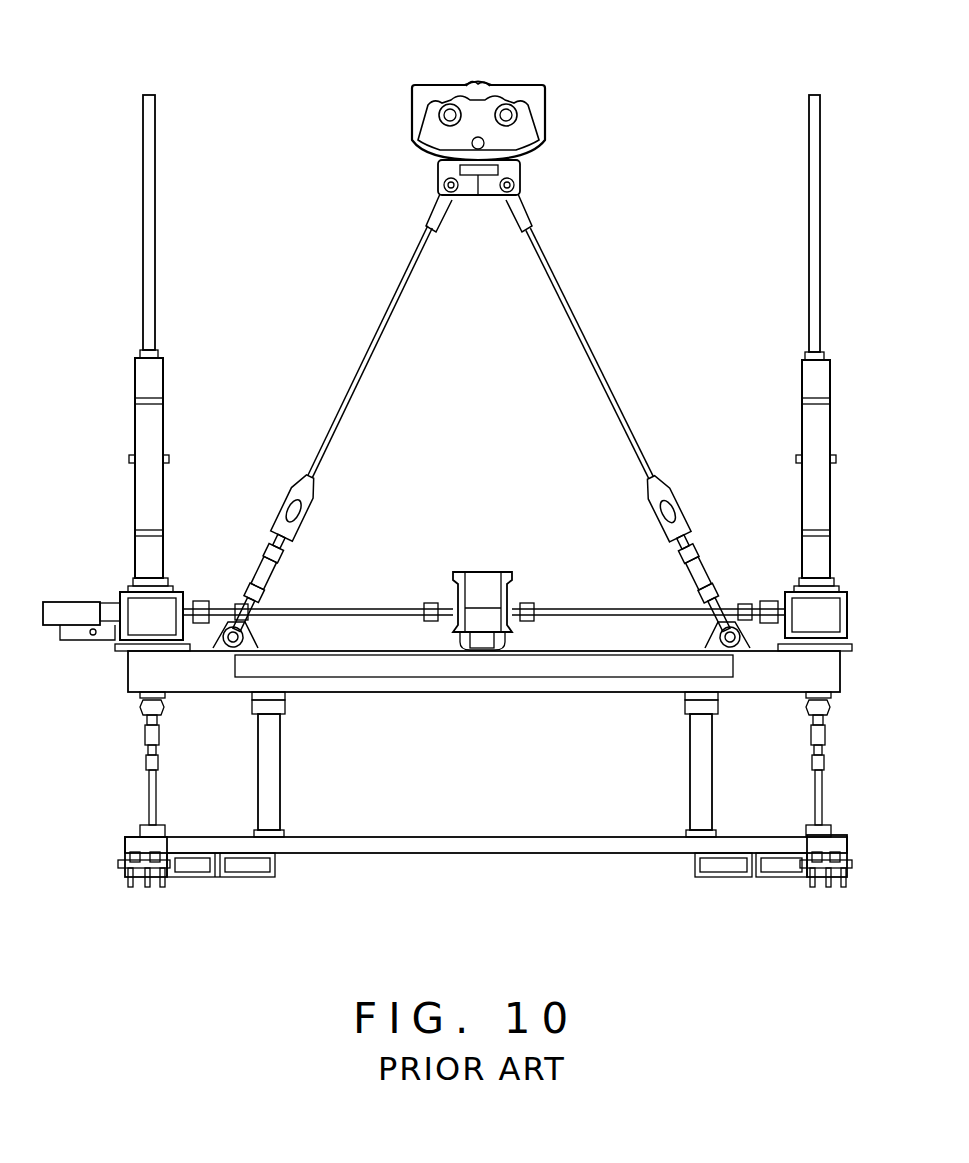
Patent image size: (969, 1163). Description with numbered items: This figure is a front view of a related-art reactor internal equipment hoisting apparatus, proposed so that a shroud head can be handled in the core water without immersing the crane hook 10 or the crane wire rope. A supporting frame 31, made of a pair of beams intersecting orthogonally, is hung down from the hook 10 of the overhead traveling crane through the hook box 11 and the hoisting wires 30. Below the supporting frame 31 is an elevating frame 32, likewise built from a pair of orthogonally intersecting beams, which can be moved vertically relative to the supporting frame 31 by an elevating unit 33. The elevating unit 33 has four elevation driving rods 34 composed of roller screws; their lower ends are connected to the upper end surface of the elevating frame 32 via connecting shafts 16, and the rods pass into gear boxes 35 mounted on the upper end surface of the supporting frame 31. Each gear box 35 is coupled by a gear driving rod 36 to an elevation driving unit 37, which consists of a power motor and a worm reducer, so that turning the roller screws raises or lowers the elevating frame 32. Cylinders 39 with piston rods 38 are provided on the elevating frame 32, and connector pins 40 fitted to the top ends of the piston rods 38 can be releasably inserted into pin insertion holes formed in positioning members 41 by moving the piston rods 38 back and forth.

The hook 10 is at (488, 80).
The hook box 11 is at (548, 104).
The connecting shafts 16 is at (826, 782).
The hoisting wires 30 is at (553, 266).
The supporting frame 31 is at (848, 672).
The elevating frame 32 is at (773, 832).
The elevating unit 33 is at (493, 508).
The elevation driving rods 34 is at (821, 237).
The gear boxes 35 is at (843, 607).
The gear driving rods 36 is at (372, 607).
The elevation driving unit 37 is at (478, 572).
The piston rods 38 is at (783, 878).
The cylinders 39 is at (722, 878).
The connector pins 40 is at (832, 880).
The positioning members 41 is at (848, 860).